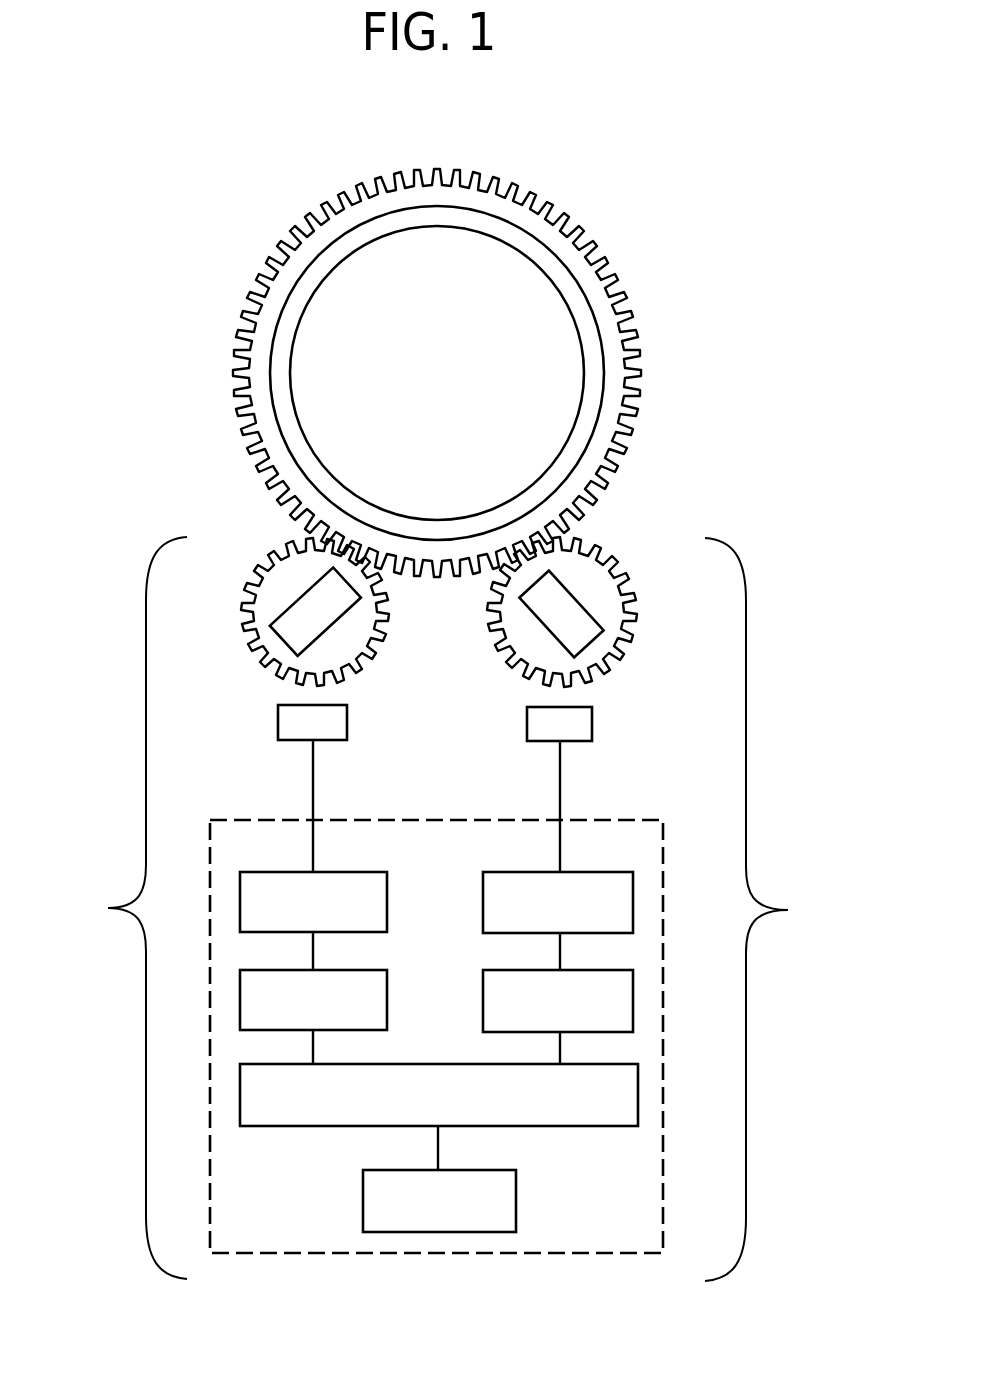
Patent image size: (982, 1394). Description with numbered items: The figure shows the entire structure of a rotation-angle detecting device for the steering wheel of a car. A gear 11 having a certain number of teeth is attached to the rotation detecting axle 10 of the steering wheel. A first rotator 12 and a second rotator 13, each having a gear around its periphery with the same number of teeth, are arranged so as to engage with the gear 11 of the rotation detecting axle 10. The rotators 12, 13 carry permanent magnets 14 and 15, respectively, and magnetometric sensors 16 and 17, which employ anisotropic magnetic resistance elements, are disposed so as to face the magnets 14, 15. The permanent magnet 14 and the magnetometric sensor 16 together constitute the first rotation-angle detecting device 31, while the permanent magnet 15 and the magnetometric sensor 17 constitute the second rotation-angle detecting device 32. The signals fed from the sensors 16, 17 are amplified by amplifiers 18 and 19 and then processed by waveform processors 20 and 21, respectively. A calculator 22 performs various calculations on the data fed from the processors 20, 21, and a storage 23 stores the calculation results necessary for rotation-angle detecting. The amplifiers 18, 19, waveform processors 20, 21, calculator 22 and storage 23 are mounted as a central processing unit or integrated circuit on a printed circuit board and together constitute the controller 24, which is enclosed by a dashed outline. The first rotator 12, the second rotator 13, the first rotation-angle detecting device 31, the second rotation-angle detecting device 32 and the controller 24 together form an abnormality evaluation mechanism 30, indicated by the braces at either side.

The rotation detecting axle 10 is at (587, 342).
The gear 11 is at (570, 245).
The first rotator 12 is at (273, 585).
The second rotator 13 is at (597, 590).
The permanent magnet 14 is at (285, 627).
The permanent magnet 15 is at (590, 635).
The magnetometric sensor 16 is at (290, 720).
The magnetometric sensor 17 is at (587, 727).
The amplifier 18 is at (253, 898).
The amplifier 19 is at (625, 903).
The waveform processor 20 is at (253, 1000).
The waveform processor 21 is at (625, 995).
The calculator 22 is at (627, 1107).
The storage 23 is at (503, 1207).
The controller 24 is at (640, 1220).
The abnormality evaluation mechanism 30 is at (447, 909).
The first rotation-angle detecting device 31 is at (372, 685).
The second rotation-angle detecting device 32 is at (502, 673).